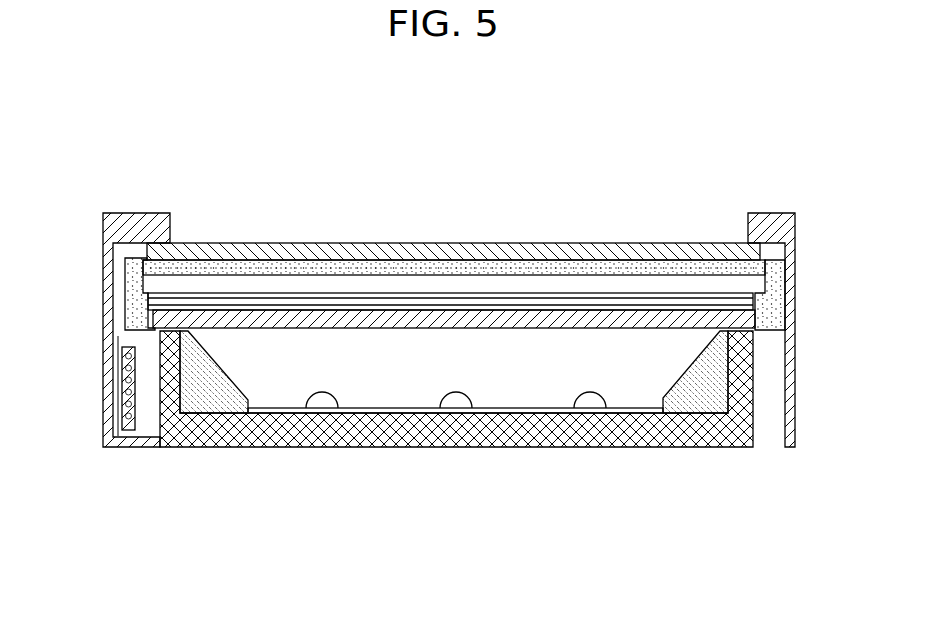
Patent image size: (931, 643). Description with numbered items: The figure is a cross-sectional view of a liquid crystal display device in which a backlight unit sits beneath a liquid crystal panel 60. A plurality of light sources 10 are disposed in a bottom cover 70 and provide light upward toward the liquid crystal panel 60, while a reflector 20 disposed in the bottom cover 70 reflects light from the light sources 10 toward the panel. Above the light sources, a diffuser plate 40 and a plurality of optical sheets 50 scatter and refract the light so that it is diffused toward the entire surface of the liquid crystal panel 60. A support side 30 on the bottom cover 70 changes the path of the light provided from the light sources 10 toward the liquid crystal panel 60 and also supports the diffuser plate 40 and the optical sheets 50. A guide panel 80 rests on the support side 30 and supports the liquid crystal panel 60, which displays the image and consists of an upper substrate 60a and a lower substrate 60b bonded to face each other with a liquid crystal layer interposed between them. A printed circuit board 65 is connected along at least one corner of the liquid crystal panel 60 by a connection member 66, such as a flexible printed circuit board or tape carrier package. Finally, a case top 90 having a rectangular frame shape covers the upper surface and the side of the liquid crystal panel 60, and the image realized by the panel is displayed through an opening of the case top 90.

The light sources 10 is at (323, 400).
The reflector 20 is at (408, 410).
The support side 30 is at (205, 392).
The diffuser plate 40 is at (518, 318).
The optical sheets 50 is at (590, 309).
The liquid crystal panel 60 is at (454, 208).
The upper substrate 60a is at (323, 243).
The lower substrate 60b is at (388, 270).
The printed circuit board 65 is at (124, 403).
The connection member 66 is at (125, 338).
The bottom cover 70 is at (538, 440).
The guide panel 80 is at (130, 302).
The case top 90 is at (768, 227).